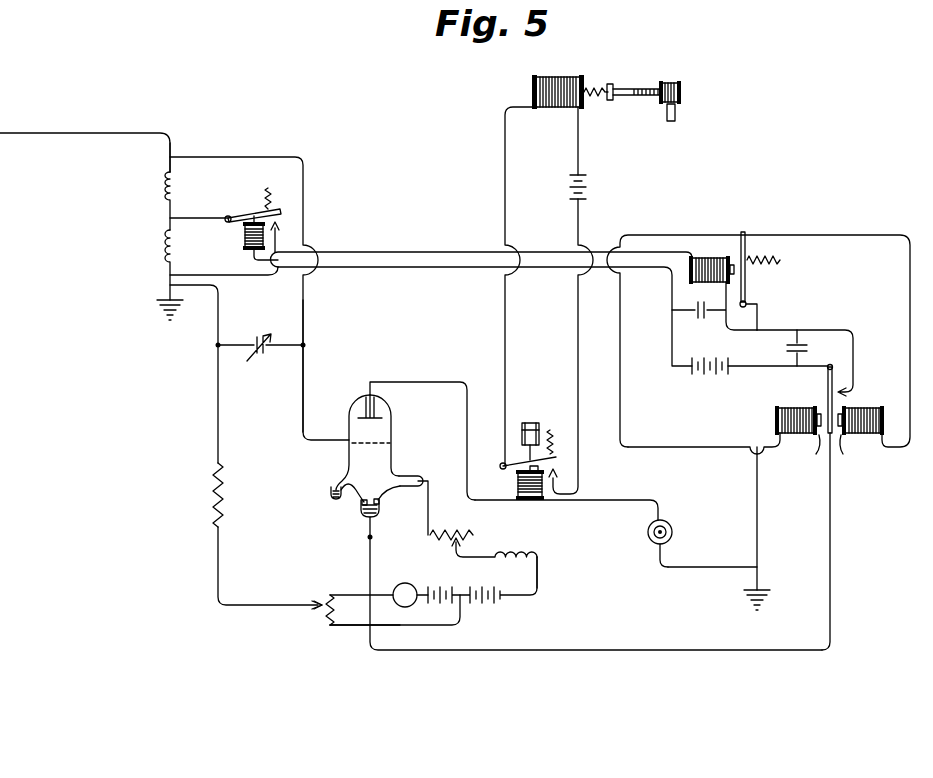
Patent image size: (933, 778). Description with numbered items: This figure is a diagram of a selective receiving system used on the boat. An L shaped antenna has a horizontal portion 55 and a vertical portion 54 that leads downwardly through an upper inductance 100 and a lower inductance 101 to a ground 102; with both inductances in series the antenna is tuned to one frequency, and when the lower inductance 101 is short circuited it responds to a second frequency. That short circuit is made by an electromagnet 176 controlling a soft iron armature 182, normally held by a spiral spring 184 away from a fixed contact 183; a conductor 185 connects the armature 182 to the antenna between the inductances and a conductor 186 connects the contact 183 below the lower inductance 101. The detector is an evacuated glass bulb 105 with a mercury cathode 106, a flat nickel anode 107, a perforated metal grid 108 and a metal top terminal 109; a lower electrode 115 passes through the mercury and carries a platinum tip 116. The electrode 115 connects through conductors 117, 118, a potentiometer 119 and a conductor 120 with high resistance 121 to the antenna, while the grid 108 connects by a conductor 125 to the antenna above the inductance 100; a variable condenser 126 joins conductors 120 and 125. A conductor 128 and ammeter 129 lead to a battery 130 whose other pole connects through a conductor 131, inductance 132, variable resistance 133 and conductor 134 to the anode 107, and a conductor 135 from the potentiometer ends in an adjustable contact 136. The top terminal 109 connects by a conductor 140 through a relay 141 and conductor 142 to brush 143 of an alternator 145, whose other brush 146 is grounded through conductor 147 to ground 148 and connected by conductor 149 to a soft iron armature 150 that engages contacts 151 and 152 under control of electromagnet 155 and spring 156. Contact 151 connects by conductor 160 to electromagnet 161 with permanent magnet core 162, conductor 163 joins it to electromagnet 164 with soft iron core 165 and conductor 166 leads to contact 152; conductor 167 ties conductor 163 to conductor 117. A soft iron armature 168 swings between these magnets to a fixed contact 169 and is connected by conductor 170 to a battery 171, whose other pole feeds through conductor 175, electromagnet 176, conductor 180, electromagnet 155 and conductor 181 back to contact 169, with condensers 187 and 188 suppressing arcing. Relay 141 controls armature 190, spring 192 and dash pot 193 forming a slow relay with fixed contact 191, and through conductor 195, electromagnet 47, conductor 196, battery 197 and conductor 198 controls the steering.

The antenna horizontal portion 55 is at (66, 133).
The vertical portion of the antenna 54 is at (177, 144).
The upper inductance 100 is at (163, 191).
The lower inductance 101 is at (163, 253).
The ground 102 is at (164, 306).
The conductor 185 is at (191, 218).
The soft iron armature 182 is at (262, 213).
The spiral spring 184 is at (282, 184).
The fixed contact 183 is at (283, 223).
The electromagnet 176 is at (243, 237).
The conductor 186 is at (262, 277).
The conductor 120 is at (216, 398).
The high resistance 121 is at (212, 490).
The variable condenser 126 is at (257, 356).
The conductor 125 is at (304, 379).
The evacuated glass bulb 105 is at (349, 459).
The metal top terminal 109 is at (377, 419).
The perforated metal grid 108 is at (392, 443).
The nickel anode 107 is at (358, 501).
The mercury cathode 106 is at (362, 516).
The lower electrode 115 is at (377, 509).
The platinum tip 116 is at (380, 502).
The conductor 134 is at (430, 503).
The conductor 140 is at (422, 382).
The conductor 117 is at (369, 559).
The conductor 128 is at (384, 594).
The ammeter 129 is at (407, 583).
The battery 130 is at (471, 586).
The adjustable contact 136 is at (463, 611).
The inductance 132 is at (514, 551).
The variable resistance 133 is at (451, 527).
The conductor 131 is at (538, 580).
The conductor 118 is at (335, 594).
The potentiometer 119 is at (327, 612).
The conductor 135 is at (352, 628).
The electromagnet 47 is at (556, 77).
The conductor 195 is at (504, 330).
The conductor 196 is at (579, 152).
The battery 197 is at (587, 187).
The conductor 198 is at (580, 304).
The conductor 180 is at (392, 252).
The conductor 175 is at (393, 268).
The soft iron armature 190 is at (558, 458).
The dash pot 193 is at (522, 435).
The spiral spring 192 is at (553, 436).
The fixed contact 191 is at (562, 479).
The relay 141 is at (517, 491).
The conductor 142 is at (632, 500).
The brush or terminal 143 is at (668, 521).
The alternator 145 is at (674, 528).
The brush or terminal 146 is at (667, 551).
The conductor 147 is at (710, 568).
The ground 148 is at (749, 601).
The conductor 149 is at (758, 521).
The conductor 167 is at (831, 546).
The conductor 160 is at (845, 235).
The conductor 166 is at (690, 448).
The stationary electromagnet 155 is at (711, 258).
The soft iron armature 150 is at (747, 289).
The fixed contact 152 is at (738, 224).
The fixed contact 151 is at (753, 236).
The spiral spring 156 is at (779, 259).
The condenser 188 is at (701, 319).
The conductor 181 is at (781, 330).
The condenser 187 is at (808, 348).
The fixed contact 169 is at (844, 388).
The battery 171 is at (708, 375).
The conductor 170 is at (752, 368).
The soft iron armature 168 is at (827, 380).
The stationary electromagnet 164 is at (797, 408).
The stationary electromagnet 161 is at (871, 408).
The conductor 163 is at (816, 440).
The soft iron core 165 is at (816, 456).
The core 162 is at (843, 456).